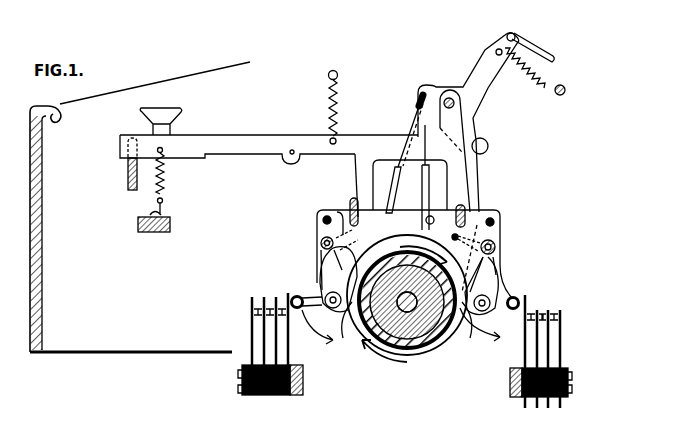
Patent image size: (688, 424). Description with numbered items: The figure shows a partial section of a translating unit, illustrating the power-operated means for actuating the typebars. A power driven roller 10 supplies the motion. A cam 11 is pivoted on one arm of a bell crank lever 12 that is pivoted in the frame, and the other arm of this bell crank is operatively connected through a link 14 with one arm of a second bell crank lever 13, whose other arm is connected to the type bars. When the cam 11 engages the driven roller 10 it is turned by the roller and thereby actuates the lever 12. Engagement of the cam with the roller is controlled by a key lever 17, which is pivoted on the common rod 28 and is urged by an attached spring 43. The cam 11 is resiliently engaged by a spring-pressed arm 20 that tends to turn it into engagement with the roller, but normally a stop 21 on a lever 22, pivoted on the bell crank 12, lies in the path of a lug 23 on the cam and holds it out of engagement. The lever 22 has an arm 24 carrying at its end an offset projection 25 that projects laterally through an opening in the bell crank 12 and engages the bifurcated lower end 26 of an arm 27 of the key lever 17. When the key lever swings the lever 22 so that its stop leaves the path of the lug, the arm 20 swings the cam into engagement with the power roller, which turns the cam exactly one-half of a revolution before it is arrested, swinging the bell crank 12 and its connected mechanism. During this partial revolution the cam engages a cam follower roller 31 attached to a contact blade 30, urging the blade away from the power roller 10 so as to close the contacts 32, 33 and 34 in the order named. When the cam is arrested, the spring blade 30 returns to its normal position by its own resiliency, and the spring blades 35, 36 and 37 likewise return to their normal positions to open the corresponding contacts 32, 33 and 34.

The power driven roller 10 is at (413, 354).
The cam 11 is at (344, 340).
The bell crank lever 12 is at (356, 252).
The bell crank lever 13 is at (483, 90).
The link 14 is at (412, 125).
The key lever 17 is at (262, 148).
The spring-pressed arm 20 is at (492, 301).
The stop 21 is at (310, 320).
The lever 22 is at (318, 263).
The lug 23 is at (337, 291).
The arm 24 is at (324, 232).
The offset projection 25 is at (352, 210).
The bifurcated lower end 26 is at (332, 214).
The arm 27 is at (359, 185).
The common rod 28 is at (449, 97).
The contact blade 30 is at (403, 336).
The cam follower roller 31 is at (297, 296).
The contact 32 is at (277, 306).
The contact 33 is at (265, 306).
The contact 34 is at (253, 306).
The spring blade 35 is at (279, 352).
The spring blade 36 is at (262, 334).
The spring blade 37 is at (252, 348).
The spring 43 is at (165, 187).